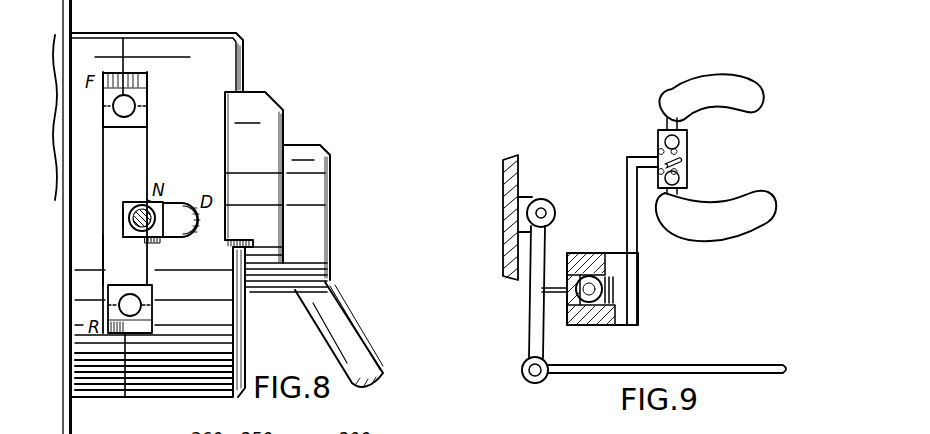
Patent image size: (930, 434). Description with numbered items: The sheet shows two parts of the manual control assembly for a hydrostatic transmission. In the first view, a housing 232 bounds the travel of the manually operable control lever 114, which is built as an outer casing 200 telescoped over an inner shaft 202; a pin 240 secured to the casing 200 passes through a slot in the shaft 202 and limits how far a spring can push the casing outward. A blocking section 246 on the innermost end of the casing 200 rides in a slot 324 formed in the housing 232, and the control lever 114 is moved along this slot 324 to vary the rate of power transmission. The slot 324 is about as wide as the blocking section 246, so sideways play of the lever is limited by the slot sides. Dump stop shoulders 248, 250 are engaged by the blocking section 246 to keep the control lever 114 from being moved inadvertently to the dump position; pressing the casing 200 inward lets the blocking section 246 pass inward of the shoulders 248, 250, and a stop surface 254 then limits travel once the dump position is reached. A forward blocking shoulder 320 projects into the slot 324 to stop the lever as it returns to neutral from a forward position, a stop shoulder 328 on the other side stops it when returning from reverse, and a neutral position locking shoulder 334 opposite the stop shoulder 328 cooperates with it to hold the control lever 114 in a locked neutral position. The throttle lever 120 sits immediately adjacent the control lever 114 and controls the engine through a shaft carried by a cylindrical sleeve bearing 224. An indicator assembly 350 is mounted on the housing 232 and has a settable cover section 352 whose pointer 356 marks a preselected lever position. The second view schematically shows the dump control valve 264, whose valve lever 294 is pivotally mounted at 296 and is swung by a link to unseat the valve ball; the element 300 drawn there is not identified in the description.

In FIG. 8, the housing 232 is at (223, 33).
In FIG. 8, the indicator assembly 350 is at (280, 100).
In FIG. 8, the cover section 352 is at (272, 125).
In FIG. 8, the pointer 356 is at (218, 214).
In FIG. 8, the control lever 114 is at (147, 107).
In FIG. 8, the slot 324 is at (122, 140).
In FIG. 8, the stop shoulder 328 is at (147, 197).
In FIG. 8, the outer casing 200 is at (138, 201).
In FIG. 8, the dump stop shoulder 250 is at (164, 200).
In FIG. 8, the blocking section 246 is at (126, 210).
In FIG. 8, the stop surface 254 is at (187, 237).
In FIG. 8, the dump stop shoulder 248 is at (162, 239).
In FIG. 8, the neutral position locking shoulder 334 is at (155, 243).
In FIG. 8, the forward blocking shoulder 320 is at (108, 237).
In FIG. 8, the inner shaft 202 is at (133, 238).
In FIG. 8, the throttle lever 120 is at (322, 328).
In FIG. 9, the cylindrical sleeve bearing 224 is at (797, 58).
In FIG. 9, the pivot mount 296 is at (554, 212).
In FIG. 9, the ball housing 300 is at (590, 276).
In FIG. 9, the dump control valve 264 is at (640, 283).
In FIG. 9, the valve lever 294 is at (541, 345).
In FIG. 9, the pin 240 is at (773, 351).